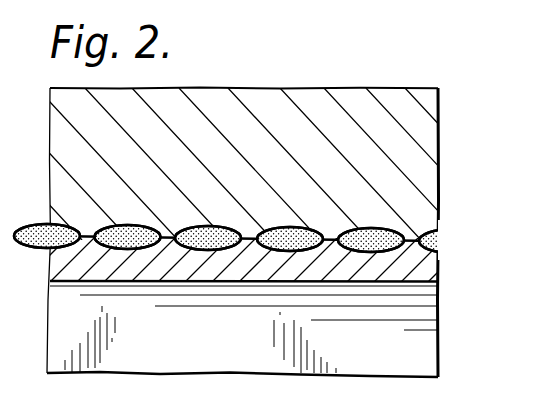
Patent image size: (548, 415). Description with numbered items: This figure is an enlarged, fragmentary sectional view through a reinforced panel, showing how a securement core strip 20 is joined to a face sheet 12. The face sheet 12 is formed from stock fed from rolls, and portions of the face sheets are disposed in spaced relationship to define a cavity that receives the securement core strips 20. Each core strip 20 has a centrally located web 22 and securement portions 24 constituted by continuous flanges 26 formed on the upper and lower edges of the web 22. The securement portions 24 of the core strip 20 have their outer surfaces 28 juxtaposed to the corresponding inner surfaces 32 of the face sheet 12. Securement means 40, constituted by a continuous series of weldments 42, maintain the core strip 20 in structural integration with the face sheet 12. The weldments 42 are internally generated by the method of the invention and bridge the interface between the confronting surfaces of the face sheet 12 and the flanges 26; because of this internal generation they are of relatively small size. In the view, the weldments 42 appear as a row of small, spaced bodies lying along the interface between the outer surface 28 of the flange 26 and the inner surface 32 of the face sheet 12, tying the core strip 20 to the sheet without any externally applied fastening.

The face sheet 12 is at (309, 105).
The securement core strip 20 is at (147, 345).
The web 22 is at (421, 358).
The securement portion 24 is at (427, 274).
The continuous flange 26 is at (78, 273).
The outer surface 28 is at (438, 240).
The inner surface 32 is at (165, 237).
The securement means 40 is at (377, 222).
The weldment 42 is at (56, 222).